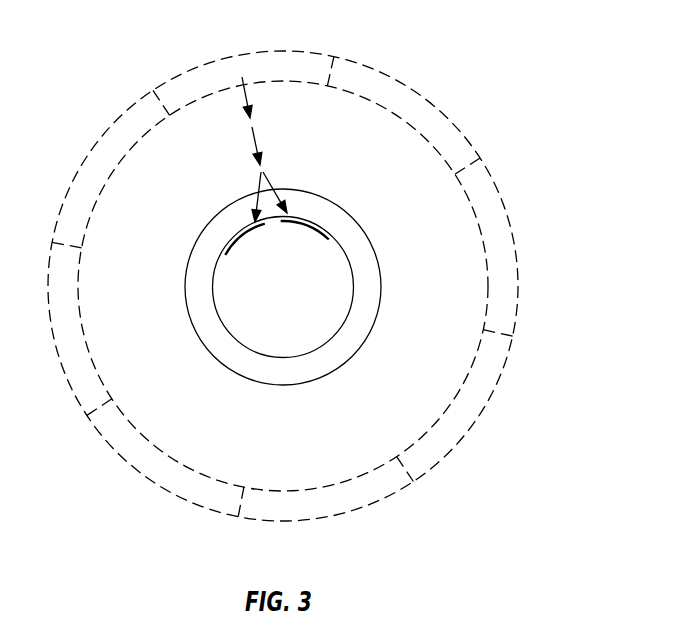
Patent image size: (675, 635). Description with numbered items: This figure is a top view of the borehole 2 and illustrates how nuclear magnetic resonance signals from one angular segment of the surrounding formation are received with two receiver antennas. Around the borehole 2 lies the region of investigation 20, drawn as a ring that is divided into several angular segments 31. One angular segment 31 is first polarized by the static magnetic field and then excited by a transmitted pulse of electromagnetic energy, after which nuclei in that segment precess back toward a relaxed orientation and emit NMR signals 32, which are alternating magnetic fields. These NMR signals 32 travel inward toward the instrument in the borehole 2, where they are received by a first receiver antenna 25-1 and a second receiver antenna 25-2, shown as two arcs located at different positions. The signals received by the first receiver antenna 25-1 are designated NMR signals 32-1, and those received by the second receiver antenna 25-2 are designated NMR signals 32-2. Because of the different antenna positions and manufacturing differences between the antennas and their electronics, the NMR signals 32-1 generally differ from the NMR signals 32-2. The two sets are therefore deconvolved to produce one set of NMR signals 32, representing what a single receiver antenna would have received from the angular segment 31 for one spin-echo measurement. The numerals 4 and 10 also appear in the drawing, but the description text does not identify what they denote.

The borehole 2 is at (376, 249).
The processing chamber region 4 is at (436, 298).
The substrate 10 is at (298, 295).
The region of investigation 20 is at (292, 493).
The first receiver antenna 25-1 is at (233, 242).
The second receiver antenna 25-2 is at (313, 222).
The angular segment 31 is at (135, 106).
The NMR signals 32 is at (250, 100).
The NMR signals received by first receiver antenna 32-1 is at (256, 185).
The NMR signals received by second receiver antenna 32-2 is at (270, 184).